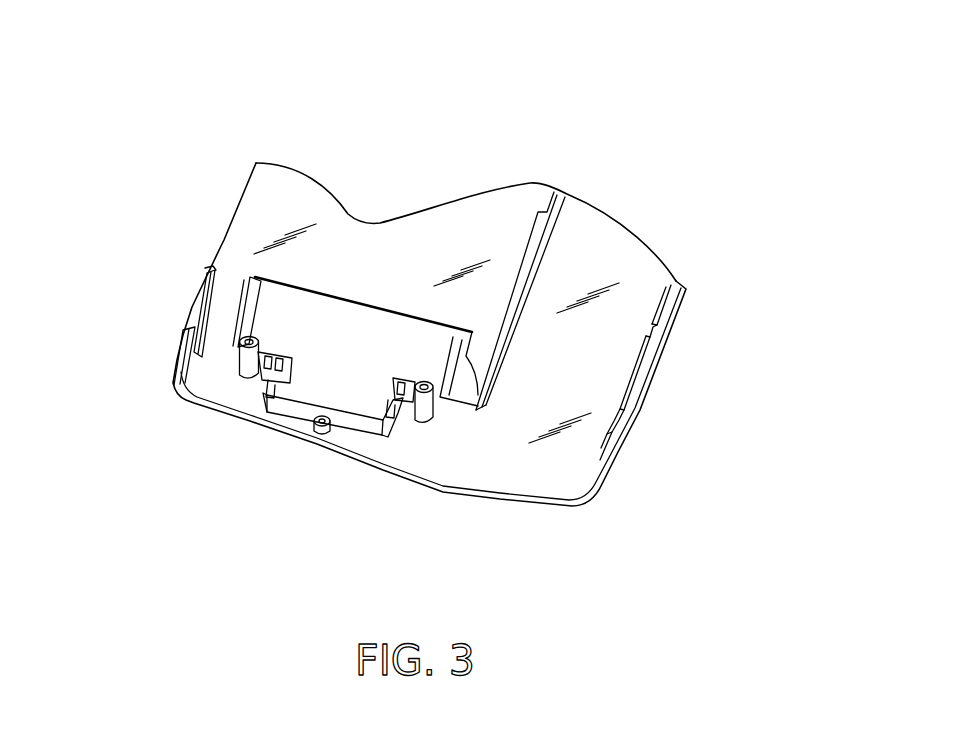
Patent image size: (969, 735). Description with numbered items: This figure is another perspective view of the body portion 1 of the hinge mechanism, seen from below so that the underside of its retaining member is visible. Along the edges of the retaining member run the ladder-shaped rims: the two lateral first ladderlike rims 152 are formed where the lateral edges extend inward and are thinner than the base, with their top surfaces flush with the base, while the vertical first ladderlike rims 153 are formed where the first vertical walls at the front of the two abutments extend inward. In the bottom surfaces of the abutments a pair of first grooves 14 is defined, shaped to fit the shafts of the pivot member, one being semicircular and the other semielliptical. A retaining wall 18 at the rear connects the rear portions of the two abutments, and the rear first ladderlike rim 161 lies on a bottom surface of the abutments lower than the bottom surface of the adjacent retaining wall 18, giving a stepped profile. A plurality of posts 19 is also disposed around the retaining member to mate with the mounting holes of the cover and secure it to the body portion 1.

The body portion 1 is at (697, 85).
The first grooves 14 is at (242, 360).
The retaining wall 18 is at (282, 408).
The posts 19 is at (178, 368).
The lateral first ladderlike rims 152 is at (456, 357).
The vertical first ladderlike rims 153 is at (238, 341).
The rear first ladderlike rim 161 is at (265, 380).